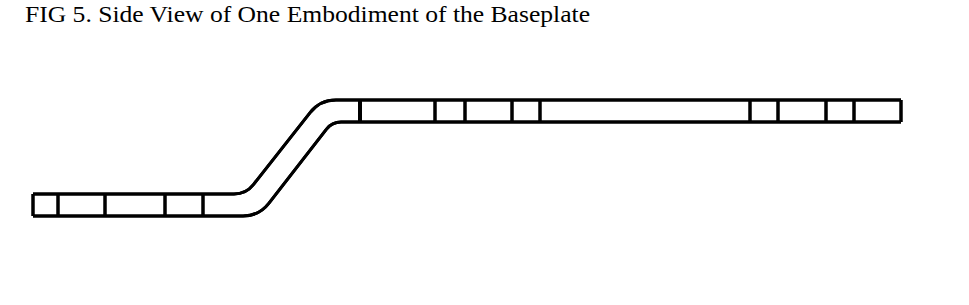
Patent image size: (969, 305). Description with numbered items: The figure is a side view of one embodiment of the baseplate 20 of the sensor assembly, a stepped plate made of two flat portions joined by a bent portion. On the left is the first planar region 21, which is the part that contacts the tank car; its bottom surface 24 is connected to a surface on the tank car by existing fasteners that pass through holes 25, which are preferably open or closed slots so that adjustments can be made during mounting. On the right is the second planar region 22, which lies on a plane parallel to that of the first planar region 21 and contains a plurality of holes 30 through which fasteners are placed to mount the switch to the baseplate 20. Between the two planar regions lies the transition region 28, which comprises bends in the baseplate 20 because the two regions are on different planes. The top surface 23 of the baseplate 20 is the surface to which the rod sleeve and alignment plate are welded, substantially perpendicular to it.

The baseplate 20 is at (467, 187).
The first planar region 21 is at (143, 206).
The second planar region 22 is at (650, 112).
The top surface 23 is at (346, 99).
The bottom surface 24 is at (236, 220).
The holes 25 is at (80, 207).
The transition region 28 is at (283, 158).
The holes 30 is at (448, 110).